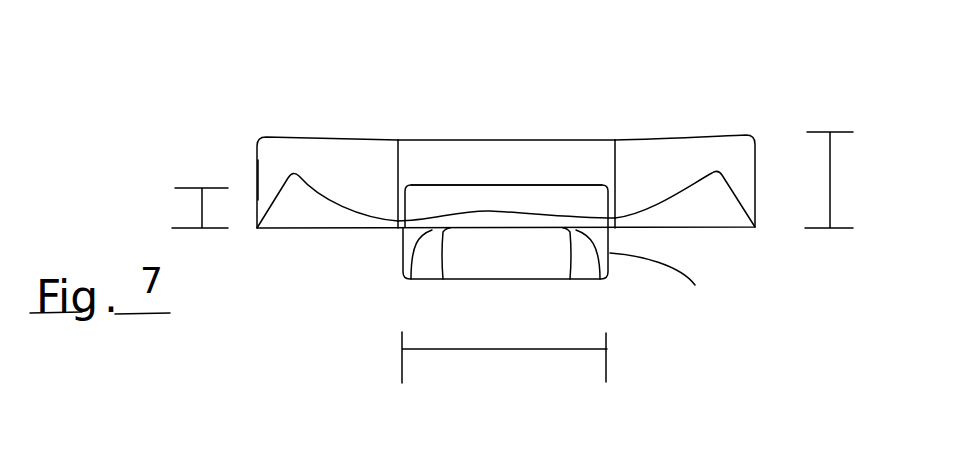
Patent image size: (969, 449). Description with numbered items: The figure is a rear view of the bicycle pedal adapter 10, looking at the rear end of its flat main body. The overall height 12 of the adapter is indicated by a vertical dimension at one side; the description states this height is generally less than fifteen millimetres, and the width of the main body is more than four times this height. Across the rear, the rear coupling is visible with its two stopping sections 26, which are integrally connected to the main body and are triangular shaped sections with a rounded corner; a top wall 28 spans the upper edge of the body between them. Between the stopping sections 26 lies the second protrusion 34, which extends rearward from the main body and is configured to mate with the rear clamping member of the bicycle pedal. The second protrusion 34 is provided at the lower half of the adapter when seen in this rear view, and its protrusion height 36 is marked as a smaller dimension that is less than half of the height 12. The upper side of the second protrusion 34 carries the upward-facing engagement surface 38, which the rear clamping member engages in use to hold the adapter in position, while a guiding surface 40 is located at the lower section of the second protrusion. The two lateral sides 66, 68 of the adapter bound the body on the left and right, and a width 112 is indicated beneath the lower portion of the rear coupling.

The assembly 10 is at (209, 118).
The height 12 is at (830, 180).
The stopping sections 26 is at (367, 185).
The top wall 28 is at (410, 136).
The second protrusion 34 is at (578, 203).
The protrusion height 36 is at (200, 208).
The engagement surface 38 is at (445, 184).
The guiding surface 40 is at (513, 216).
The side 66 is at (255, 172).
The side 68 is at (757, 188).
The width dimension 112 is at (485, 350).